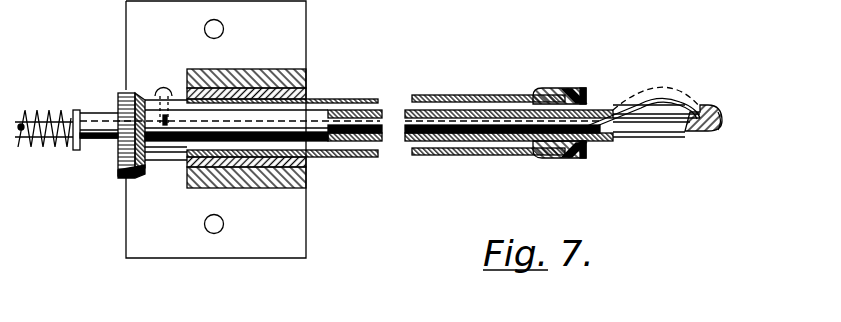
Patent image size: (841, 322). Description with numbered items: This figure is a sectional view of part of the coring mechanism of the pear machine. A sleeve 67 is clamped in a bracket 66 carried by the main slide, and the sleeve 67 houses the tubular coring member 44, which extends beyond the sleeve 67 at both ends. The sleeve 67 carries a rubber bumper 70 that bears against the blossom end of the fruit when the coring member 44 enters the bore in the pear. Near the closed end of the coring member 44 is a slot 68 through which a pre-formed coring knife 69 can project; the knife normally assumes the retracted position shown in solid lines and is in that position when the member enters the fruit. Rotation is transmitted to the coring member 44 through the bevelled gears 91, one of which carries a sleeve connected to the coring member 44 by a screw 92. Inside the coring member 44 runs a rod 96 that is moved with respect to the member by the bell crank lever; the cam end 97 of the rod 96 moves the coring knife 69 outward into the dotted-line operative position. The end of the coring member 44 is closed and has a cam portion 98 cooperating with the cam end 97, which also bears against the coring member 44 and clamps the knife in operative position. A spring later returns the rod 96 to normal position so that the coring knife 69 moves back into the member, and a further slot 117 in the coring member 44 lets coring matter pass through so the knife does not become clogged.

The rod 96 is at (47, 113).
The bevelled gears 91 is at (118, 161).
The screw 92 is at (164, 92).
The bracket 66 is at (306, 80).
The coring member 44 is at (382, 116).
The sleeve 67 is at (485, 95).
The cam end 97 is at (592, 110).
The rubber bumper 70 is at (580, 158).
The coring knife 69 is at (670, 98).
The slot 117 is at (653, 138).
The slot 68 is at (700, 106).
The cam portion 98 is at (722, 114).